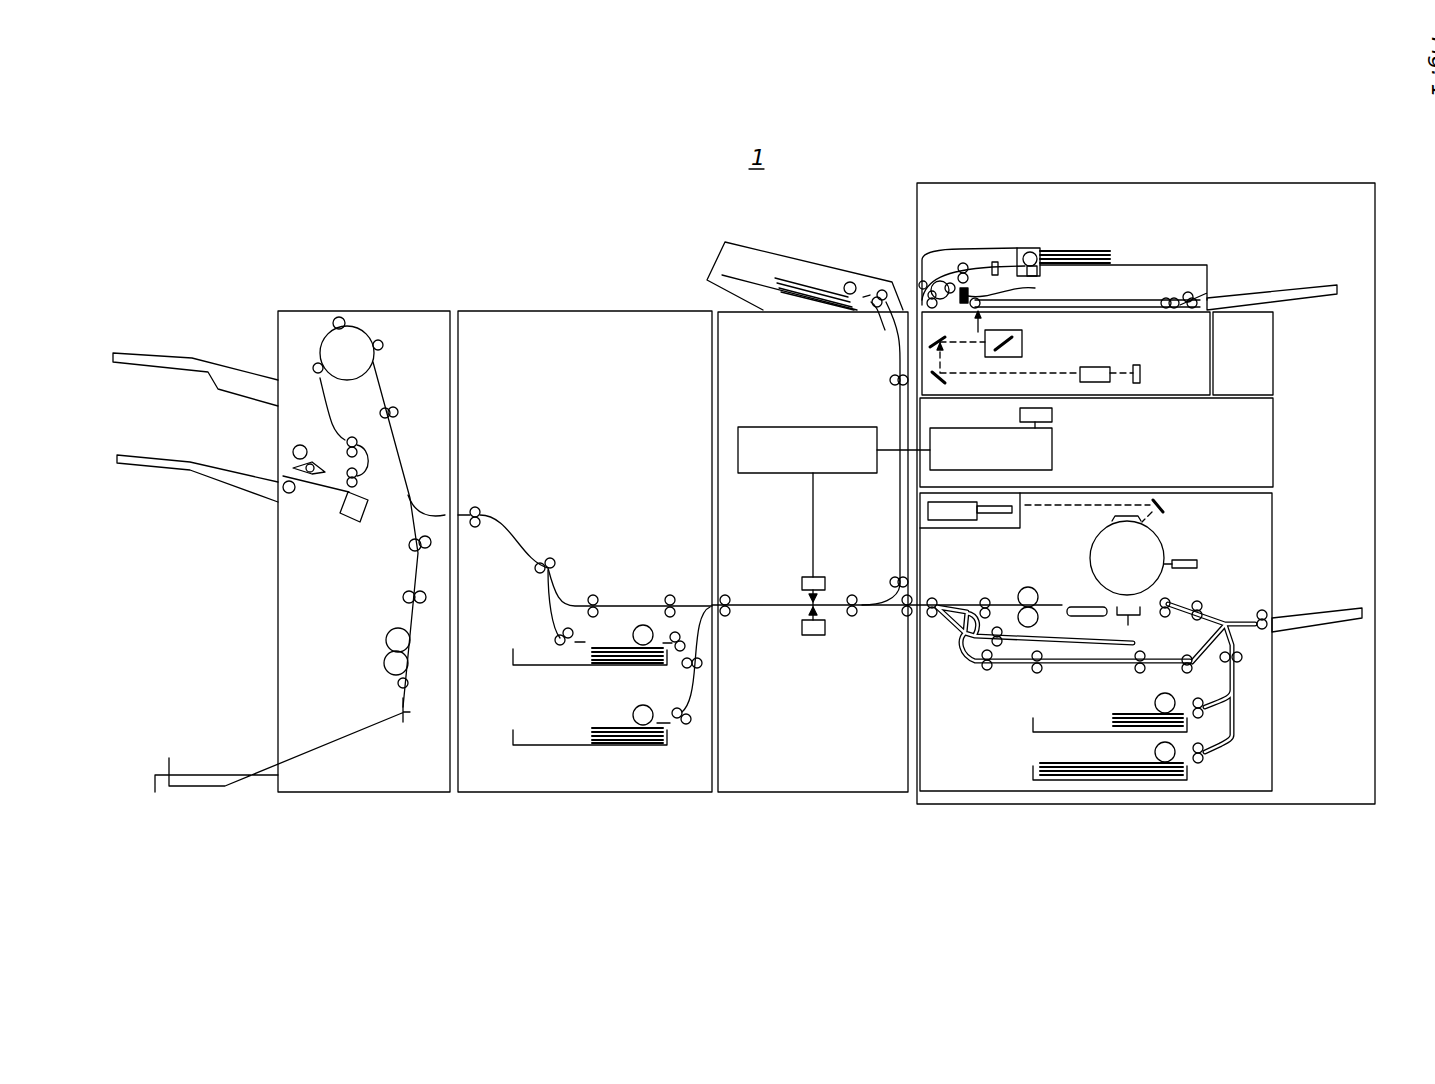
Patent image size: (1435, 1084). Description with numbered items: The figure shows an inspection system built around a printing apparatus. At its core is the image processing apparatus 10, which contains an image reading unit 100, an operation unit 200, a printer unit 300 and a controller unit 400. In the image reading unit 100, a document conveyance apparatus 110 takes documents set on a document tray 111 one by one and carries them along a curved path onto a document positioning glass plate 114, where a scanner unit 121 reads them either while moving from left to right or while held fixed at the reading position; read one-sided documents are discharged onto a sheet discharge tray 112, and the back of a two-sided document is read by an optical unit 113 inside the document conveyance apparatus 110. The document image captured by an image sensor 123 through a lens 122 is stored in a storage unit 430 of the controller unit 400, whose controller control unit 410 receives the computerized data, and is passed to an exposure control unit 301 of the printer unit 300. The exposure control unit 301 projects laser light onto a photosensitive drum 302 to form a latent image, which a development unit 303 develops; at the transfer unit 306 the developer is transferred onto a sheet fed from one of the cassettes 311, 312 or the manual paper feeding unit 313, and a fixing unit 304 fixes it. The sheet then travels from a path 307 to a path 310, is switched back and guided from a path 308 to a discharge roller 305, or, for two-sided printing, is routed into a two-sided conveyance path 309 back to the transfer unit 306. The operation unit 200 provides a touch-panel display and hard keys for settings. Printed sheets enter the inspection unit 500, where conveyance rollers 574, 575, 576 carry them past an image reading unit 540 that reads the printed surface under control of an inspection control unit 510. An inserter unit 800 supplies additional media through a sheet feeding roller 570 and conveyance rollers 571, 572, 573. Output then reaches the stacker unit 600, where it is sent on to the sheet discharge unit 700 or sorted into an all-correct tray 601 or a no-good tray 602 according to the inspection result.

The image processing apparatus 10 is at (1268, 183).
The image reading unit 100 is at (1066, 354).
The document conveyance apparatus 110 is at (990, 245).
The document tray 111 is at (1170, 263).
The sheet discharge tray 112 is at (1290, 287).
The optical unit 113 is at (1026, 290).
The document positioning glass plate 114 is at (1186, 307).
The scanner unit 121 is at (1024, 333).
The lens 122 is at (1092, 367).
The image sensor 123 is at (1136, 364).
The operation unit 200 is at (1274, 355).
The printer unit 300 is at (1273, 722).
The exposure control unit 301 is at (1021, 521).
The photosensitive drum 302 is at (1160, 533).
The development unit 303 is at (1198, 564).
The fixing unit 304 is at (1028, 587).
The discharge roller 305 is at (937, 598).
The transfer unit 306 is at (1128, 625).
The path 307 is at (980, 598).
The path 308 is at (945, 620).
The two-sided conveyance path 309 is at (1010, 668).
The path 310 is at (1065, 645).
The cassette 311 is at (1033, 722).
The cassette 312 is at (1033, 770).
The manual paper feeding unit 313 is at (1310, 632).
The controller unit 400 is at (1096, 443).
The controller control unit 410 is at (1053, 450).
The storage unit 430 is at (1053, 415).
The inspection unit 500 is at (833, 795).
The inspection control unit 510 is at (770, 425).
The image reading unit 540 is at (806, 576).
The sheet feeding roller 570 is at (880, 290).
The conveyance roller 571 is at (873, 310).
The conveyance roller 572 is at (890, 381).
The conveyance roller 573 is at (892, 578).
The conveyance roller 574 is at (905, 615).
The conveyance roller 575 is at (850, 615).
The conveyance roller 576 is at (727, 615).
The stacker unit 600 is at (595, 795).
The all-correct (OK) tray 601 is at (538, 668).
The no-good (NG) tray 602 is at (538, 747).
The sheet discharge unit 700 is at (278, 602).
The inserter unit 800 is at (828, 270).